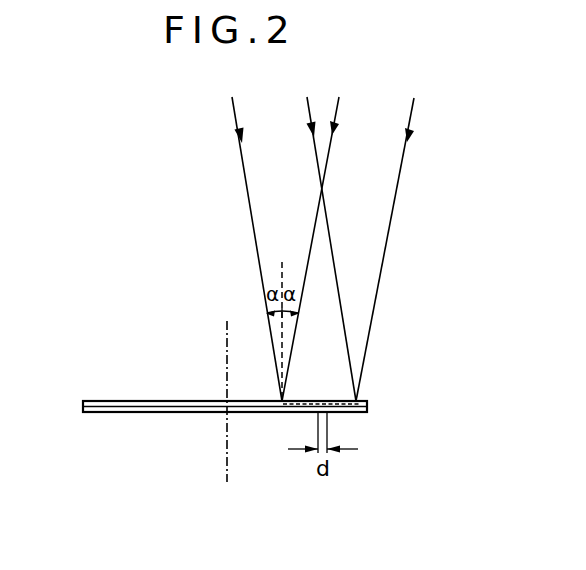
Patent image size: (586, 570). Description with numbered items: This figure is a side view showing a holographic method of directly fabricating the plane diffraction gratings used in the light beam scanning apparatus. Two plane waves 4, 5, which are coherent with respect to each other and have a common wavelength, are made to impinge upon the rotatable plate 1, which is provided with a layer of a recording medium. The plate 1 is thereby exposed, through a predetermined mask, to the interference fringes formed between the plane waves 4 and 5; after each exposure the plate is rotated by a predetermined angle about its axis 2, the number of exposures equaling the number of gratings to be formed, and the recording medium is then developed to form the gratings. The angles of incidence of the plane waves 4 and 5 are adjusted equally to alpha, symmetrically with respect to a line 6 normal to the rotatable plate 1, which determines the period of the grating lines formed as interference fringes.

The rotatable plate 1 is at (86, 409).
The center axis of rotation 2 is at (226, 348).
The plane wave 4 is at (253, 124).
The plane wave 5 is at (395, 121).
The line normal to the rotatable plate 6 is at (285, 263).